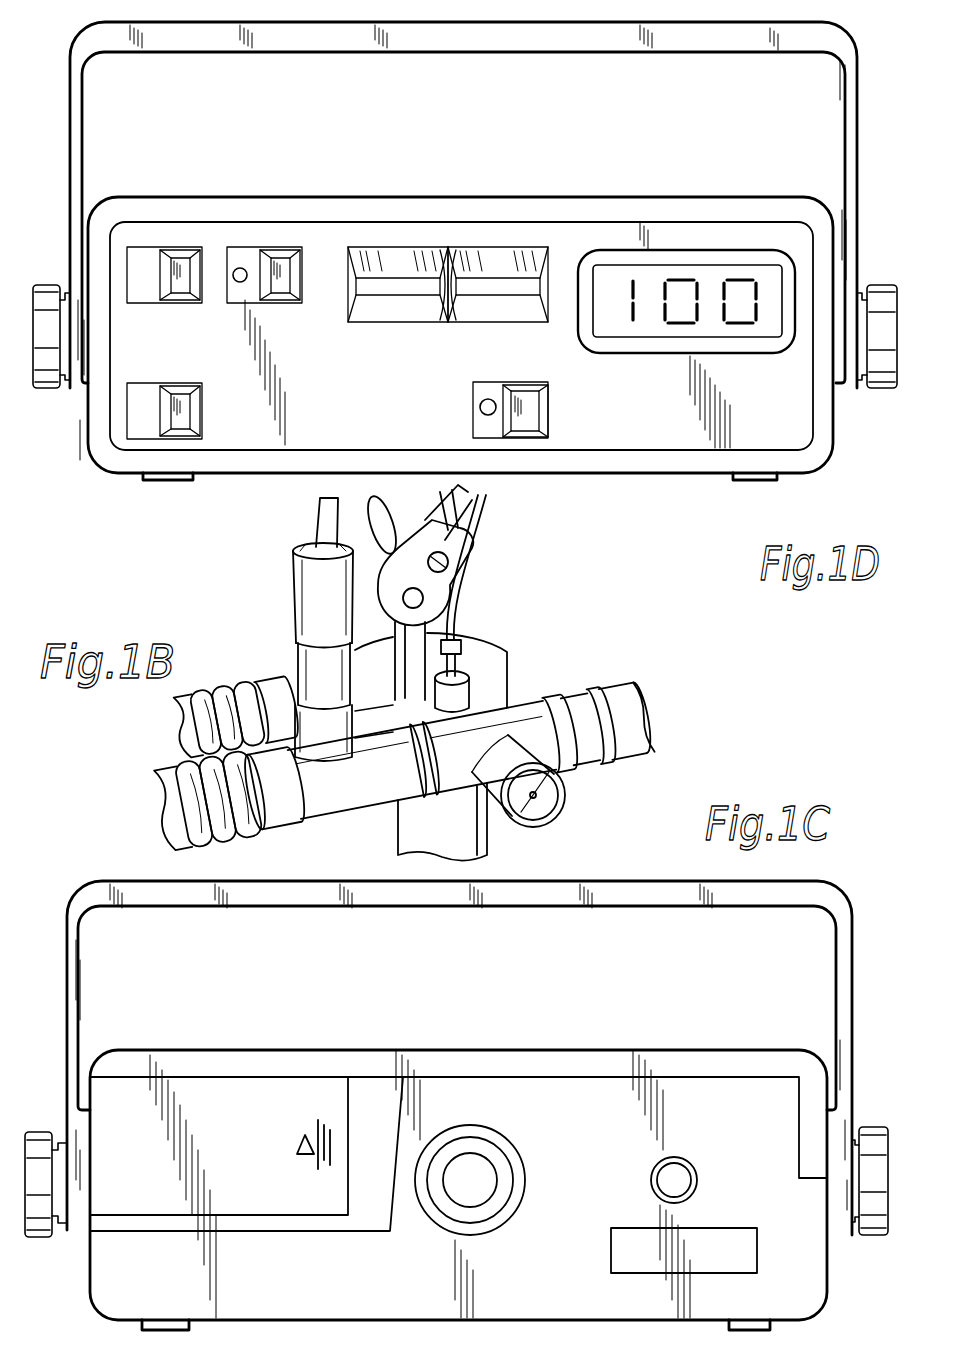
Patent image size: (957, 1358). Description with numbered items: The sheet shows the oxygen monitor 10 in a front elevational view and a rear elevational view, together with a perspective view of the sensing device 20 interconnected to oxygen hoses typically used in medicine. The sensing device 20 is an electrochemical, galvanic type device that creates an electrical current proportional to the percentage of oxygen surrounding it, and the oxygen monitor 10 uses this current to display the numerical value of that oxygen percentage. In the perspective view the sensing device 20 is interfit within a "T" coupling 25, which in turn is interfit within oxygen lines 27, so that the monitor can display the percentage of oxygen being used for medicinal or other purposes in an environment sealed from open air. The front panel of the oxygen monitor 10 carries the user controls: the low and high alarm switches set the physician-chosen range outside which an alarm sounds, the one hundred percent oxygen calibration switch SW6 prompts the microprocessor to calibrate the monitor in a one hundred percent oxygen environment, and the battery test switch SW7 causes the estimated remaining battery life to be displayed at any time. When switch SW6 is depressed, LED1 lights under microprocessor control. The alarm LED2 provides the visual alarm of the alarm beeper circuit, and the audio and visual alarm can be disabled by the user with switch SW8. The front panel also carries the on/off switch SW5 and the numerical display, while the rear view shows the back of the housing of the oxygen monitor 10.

In FIG. 1D, the oxygen monitor 10 is at (225, 197).
In FIG. 1C, the oxygen monitor 10 is at (200, 1049).
In FIG. 1D, the on/off switch SW5 is at (143, 283).
In FIG. 1D, the 100% oxygen calibration switch SW6 is at (293, 278).
In FIG. 1D, the battery test switch SW7 is at (143, 422).
In FIG. 1D, the alarm disable switch SW8 is at (548, 418).
In FIG. 1D, the calibration LED LED1 is at (240, 284).
In FIG. 1D, the alarm LED LED2 is at (487, 420).
In FIG. 1B, the sensing device 20 is at (307, 617).
In FIG. 1B, the "T" coupling 25 is at (351, 788).
In FIG. 1B, the oxygen lines 27 is at (190, 752).